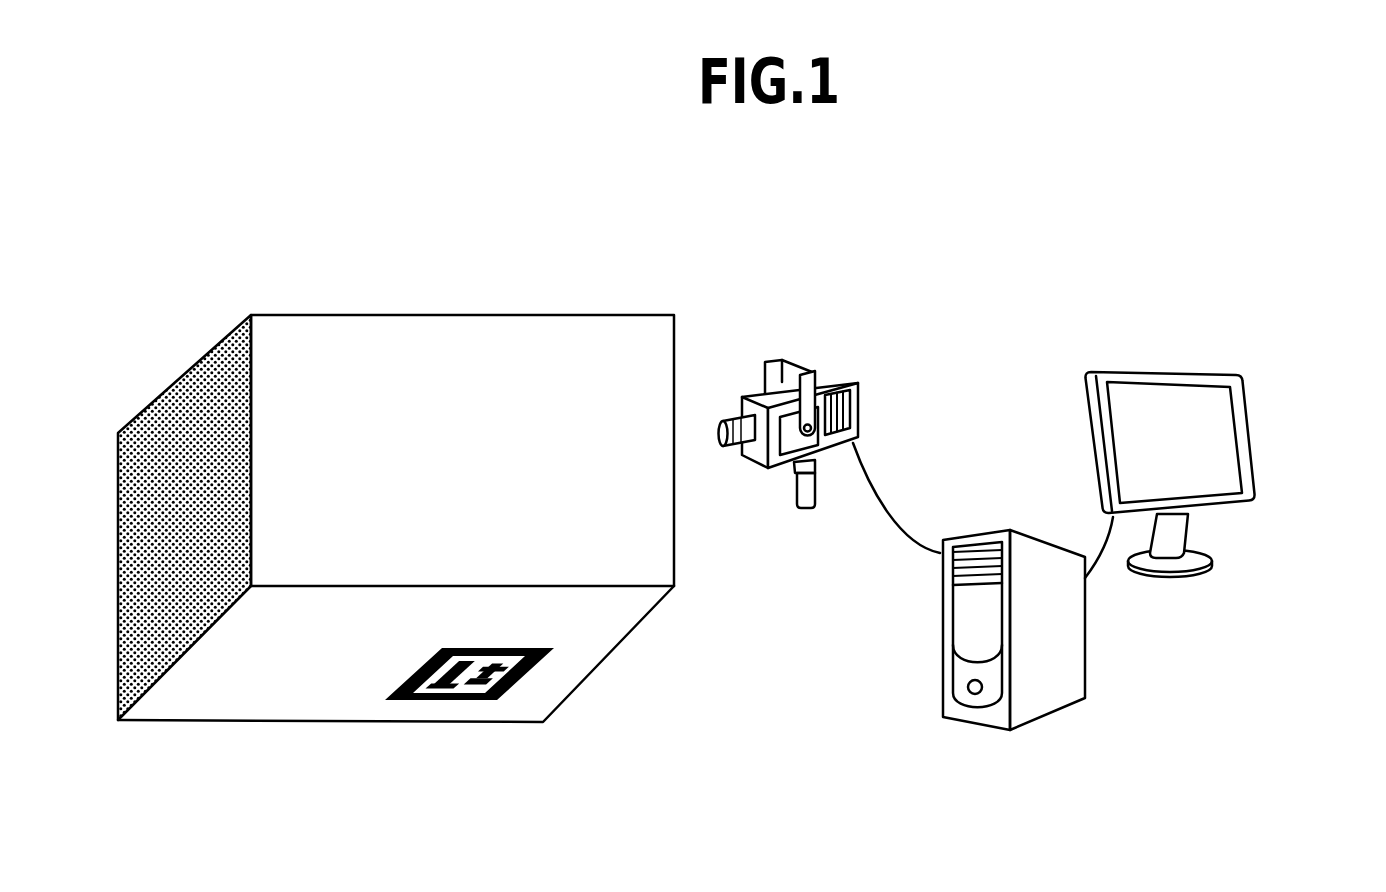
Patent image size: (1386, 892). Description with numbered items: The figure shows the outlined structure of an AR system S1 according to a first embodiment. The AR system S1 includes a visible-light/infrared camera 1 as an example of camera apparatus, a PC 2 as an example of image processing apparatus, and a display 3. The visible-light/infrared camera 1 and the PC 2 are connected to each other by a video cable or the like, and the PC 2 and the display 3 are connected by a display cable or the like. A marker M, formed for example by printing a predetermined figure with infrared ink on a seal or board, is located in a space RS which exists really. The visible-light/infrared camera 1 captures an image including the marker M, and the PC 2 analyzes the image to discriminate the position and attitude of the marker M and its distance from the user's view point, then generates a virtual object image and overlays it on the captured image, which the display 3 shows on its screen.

The visible-light/infrared camera 1 is at (833, 374).
The PC 2 is at (975, 530).
The display 3 is at (1198, 371).
The space RS is at (351, 340).
The marker M is at (467, 652).
The AR system S1 is at (840, 800).